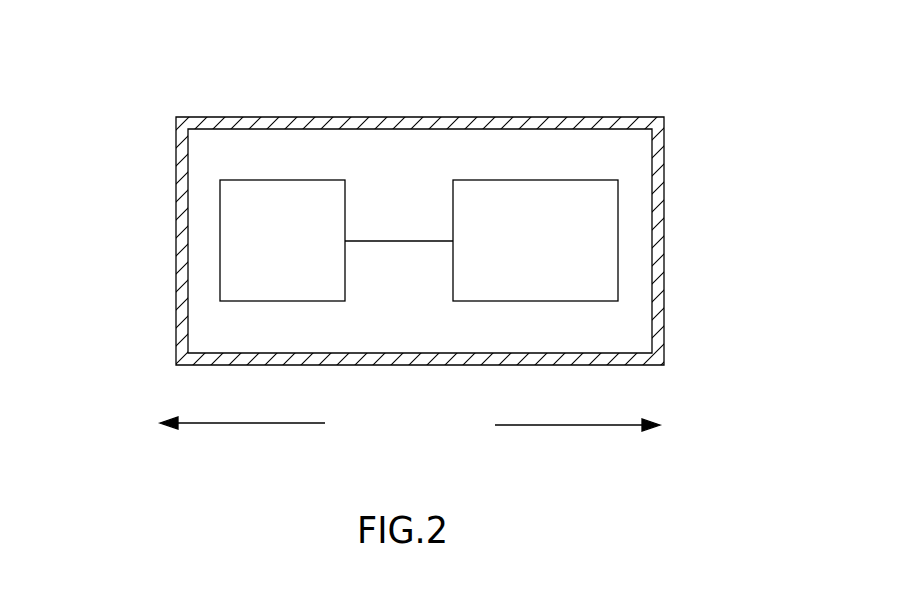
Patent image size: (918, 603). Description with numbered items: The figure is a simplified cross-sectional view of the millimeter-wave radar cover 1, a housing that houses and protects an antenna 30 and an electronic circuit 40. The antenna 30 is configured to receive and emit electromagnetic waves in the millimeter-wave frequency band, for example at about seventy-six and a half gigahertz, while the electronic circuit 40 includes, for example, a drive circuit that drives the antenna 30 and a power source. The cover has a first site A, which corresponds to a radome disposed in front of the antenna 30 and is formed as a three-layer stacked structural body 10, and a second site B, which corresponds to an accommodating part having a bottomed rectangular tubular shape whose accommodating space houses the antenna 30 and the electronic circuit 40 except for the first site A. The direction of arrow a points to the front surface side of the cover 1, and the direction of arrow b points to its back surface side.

The millimeter-wave radar cover 1 is at (410, 47).
The second site B is at (612, 117).
The first site A is at (349, 241).
The three-layer stacked structural body 10 is at (176, 250).
The antenna 30 is at (289, 180).
The electronic circuit 40 is at (545, 180).
The arrow a is at (249, 424).
The arrow b is at (580, 427).